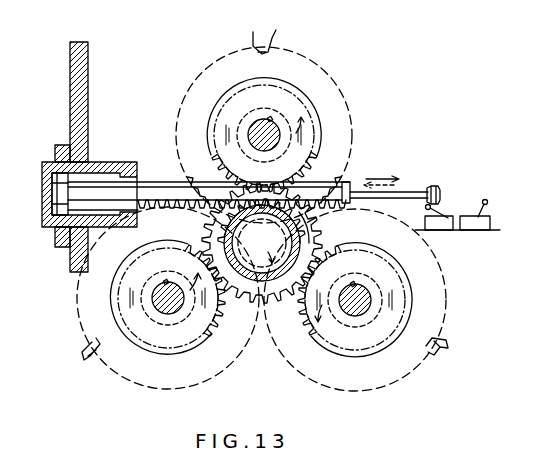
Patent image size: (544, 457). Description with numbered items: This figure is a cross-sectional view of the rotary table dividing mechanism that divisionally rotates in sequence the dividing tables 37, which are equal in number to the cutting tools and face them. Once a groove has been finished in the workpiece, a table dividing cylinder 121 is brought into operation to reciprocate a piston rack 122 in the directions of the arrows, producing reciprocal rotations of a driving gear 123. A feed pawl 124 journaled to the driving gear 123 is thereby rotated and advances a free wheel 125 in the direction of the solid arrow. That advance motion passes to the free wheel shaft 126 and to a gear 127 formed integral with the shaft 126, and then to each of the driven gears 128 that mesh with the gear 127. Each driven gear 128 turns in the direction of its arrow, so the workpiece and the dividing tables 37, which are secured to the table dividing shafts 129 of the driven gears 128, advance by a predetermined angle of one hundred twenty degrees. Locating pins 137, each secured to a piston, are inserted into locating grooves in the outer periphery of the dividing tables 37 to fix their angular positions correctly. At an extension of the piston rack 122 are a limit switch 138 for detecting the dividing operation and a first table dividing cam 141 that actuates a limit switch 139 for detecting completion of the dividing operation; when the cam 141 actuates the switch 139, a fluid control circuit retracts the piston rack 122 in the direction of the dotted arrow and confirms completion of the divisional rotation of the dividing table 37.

The dividing table 37 is at (342, 92).
The table dividing cylinder 121 is at (111, 161).
The piston rack 122 is at (157, 189).
The driving gear 123 is at (250, 284).
The feed pawl 124 is at (226, 222).
The free wheel 125 is at (283, 232).
The free wheel shaft 126 is at (272, 292).
The gear 127 is at (306, 270).
The driven gear 128 is at (282, 98).
The table dividing shaft 129 is at (256, 128).
The locating pin 137 is at (262, 45).
The limit switch 138 is at (473, 230).
The limit switch 139 is at (455, 215).
The first table dividing cam 141 is at (432, 187).